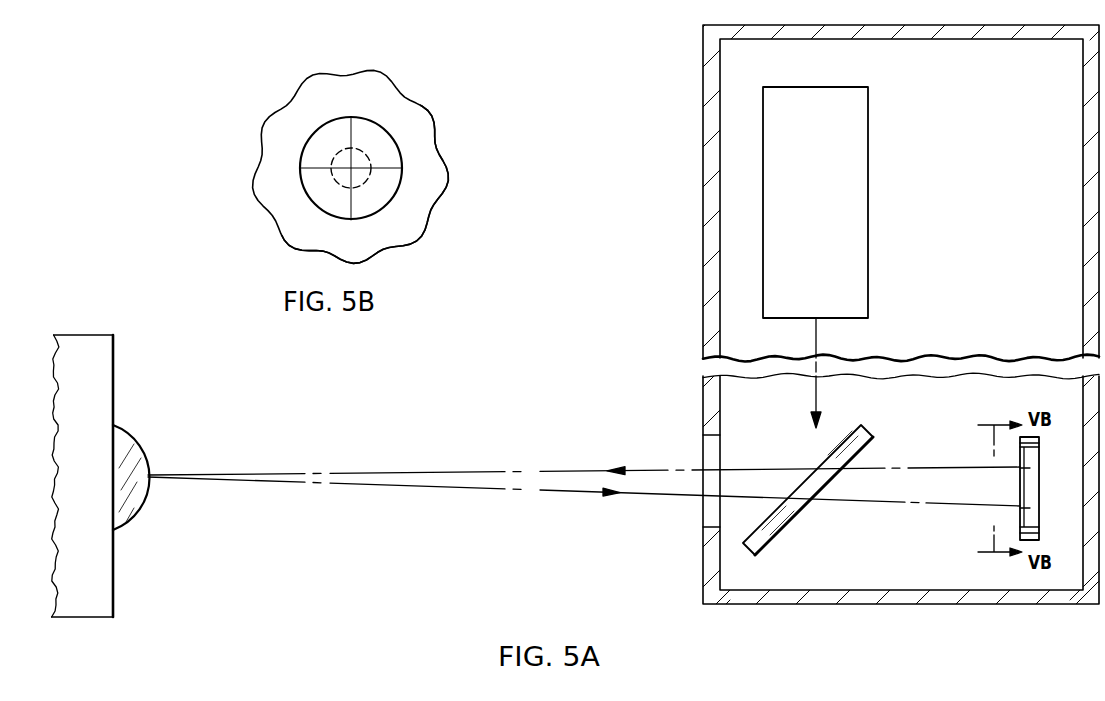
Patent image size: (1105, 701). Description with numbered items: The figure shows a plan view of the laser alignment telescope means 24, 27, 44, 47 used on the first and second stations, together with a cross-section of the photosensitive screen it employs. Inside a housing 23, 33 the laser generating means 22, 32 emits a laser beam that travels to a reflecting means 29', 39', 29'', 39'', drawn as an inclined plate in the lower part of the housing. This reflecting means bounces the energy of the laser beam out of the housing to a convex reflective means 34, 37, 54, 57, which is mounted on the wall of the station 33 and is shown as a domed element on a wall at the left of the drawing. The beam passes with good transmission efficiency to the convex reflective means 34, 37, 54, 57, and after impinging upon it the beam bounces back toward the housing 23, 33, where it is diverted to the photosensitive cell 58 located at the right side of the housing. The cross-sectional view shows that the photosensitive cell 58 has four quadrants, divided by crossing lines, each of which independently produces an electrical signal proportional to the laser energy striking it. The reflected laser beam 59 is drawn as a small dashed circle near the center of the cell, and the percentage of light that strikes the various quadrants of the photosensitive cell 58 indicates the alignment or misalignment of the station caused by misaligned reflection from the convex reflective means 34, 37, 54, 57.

In FIG. 5A, the laser generating means 22 is at (851, 257).
In FIG. 5A, the laser generating means 32 is at (868, 137).
In FIG. 5A, the housing 23 is at (862, 320).
In FIG. 5B, the housing 23 is at (375, 166).
In FIG. 5A, the station mounting 33 is at (705, 560).
In FIG. 5B, the station mounting 33 is at (441, 189).
In FIG. 5A, the laser alignment telescope means 24 is at (901, 213).
In FIG. 5A, the laser alignment telescope means 27 is at (901, 213).
In FIG. 5A, the laser alignment telescope means 44 is at (901, 213).
In FIG. 5A, the laser alignment telescope means 47 is at (901, 213).
In FIG. 5A, the reflecting means 29' is at (808, 503).
In FIG. 5A, the reflecting means 39' is at (808, 503).
In FIG. 5A, the reflecting means 29'' is at (808, 503).
In FIG. 5A, the reflecting means 39'' is at (808, 503).
In FIG. 5A, the photosensitive cell 58 is at (1039, 522).
In FIG. 5B, the photosensitive cell 58 is at (393, 137).
In FIG. 5B, the reflected laser beam 59 is at (340, 186).
In FIG. 5A, the convex reflective means 34 is at (184, 477).
In FIG. 5A, the convex reflective means 37 is at (184, 477).
In FIG. 5A, the convex reflective means 54 is at (184, 477).
In FIG. 5A, the convex reflective means 57 is at (140, 452).